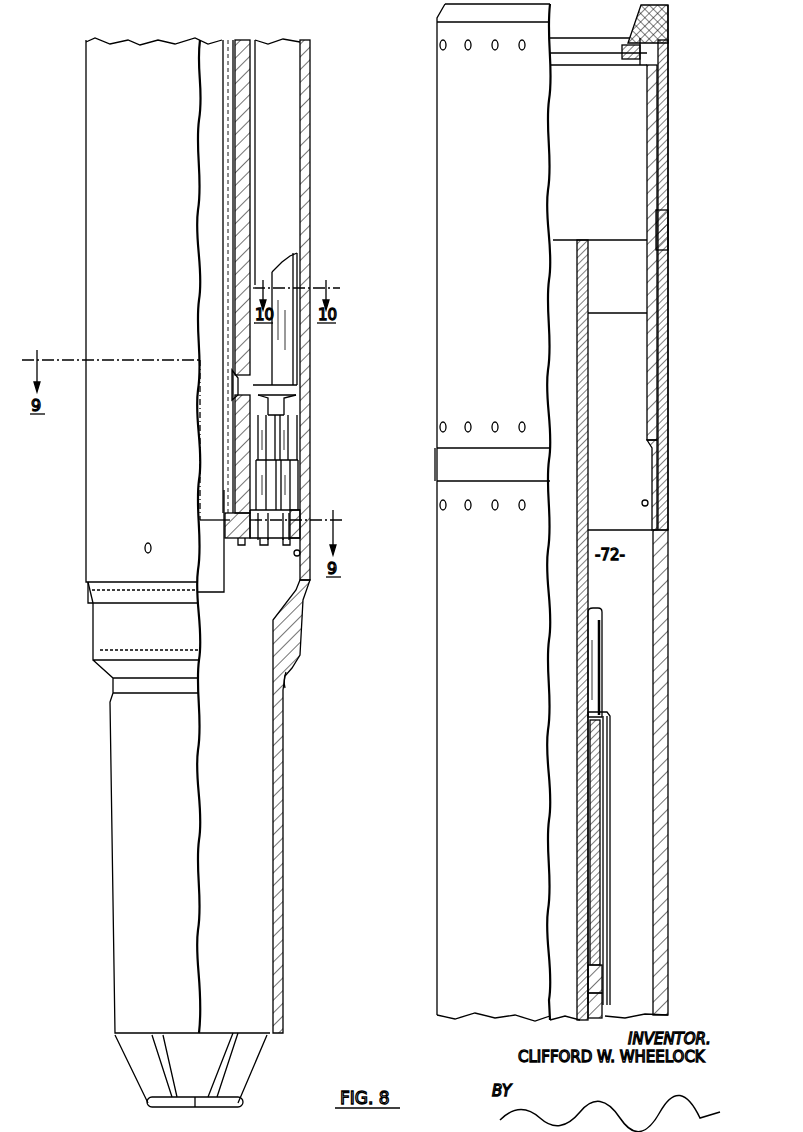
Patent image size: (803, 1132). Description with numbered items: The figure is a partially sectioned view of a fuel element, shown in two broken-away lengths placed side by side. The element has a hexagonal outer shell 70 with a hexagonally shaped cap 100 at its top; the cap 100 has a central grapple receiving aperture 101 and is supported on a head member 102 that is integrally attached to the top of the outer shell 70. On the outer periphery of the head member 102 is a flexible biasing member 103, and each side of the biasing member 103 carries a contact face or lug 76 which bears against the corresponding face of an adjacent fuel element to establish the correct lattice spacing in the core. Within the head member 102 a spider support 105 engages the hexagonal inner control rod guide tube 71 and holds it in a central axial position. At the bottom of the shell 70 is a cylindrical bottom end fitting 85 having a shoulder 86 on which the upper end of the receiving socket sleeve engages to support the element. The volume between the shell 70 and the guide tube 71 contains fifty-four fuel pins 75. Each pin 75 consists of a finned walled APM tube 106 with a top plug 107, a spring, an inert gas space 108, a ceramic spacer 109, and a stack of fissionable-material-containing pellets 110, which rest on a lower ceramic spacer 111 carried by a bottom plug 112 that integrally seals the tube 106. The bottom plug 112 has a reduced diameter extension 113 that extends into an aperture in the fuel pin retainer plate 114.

The hexagonal outer shell 70 is at (108, 80).
The inner control rod guide tube 71 is at (225, 238).
The fuel pin 75 is at (612, 770).
The contact face or lug 76 is at (666, 250).
The bottom end fitting 85 is at (298, 650).
The shoulder 86 is at (288, 680).
The hexagonally shaped cap 100 is at (658, 28).
The grapple receiving aperture 101 is at (630, 58).
The head member 102 is at (648, 160).
The flexible biasing member 103 is at (662, 390).
The spider support 105 is at (610, 303).
The finned walled APM tube 106 is at (606, 932).
The top plug 107 is at (595, 635).
The inert gas space 108 is at (598, 866).
The ceramic spacer 109 is at (601, 975).
The fissionable-material-containing pellets 110 is at (250, 85).
The lower ceramic spacer 111 is at (270, 383).
The bottom plug 112 is at (243, 485).
The reduced diameter extension 113 is at (246, 542).
The fuel pin retainer plate 114 is at (296, 512).